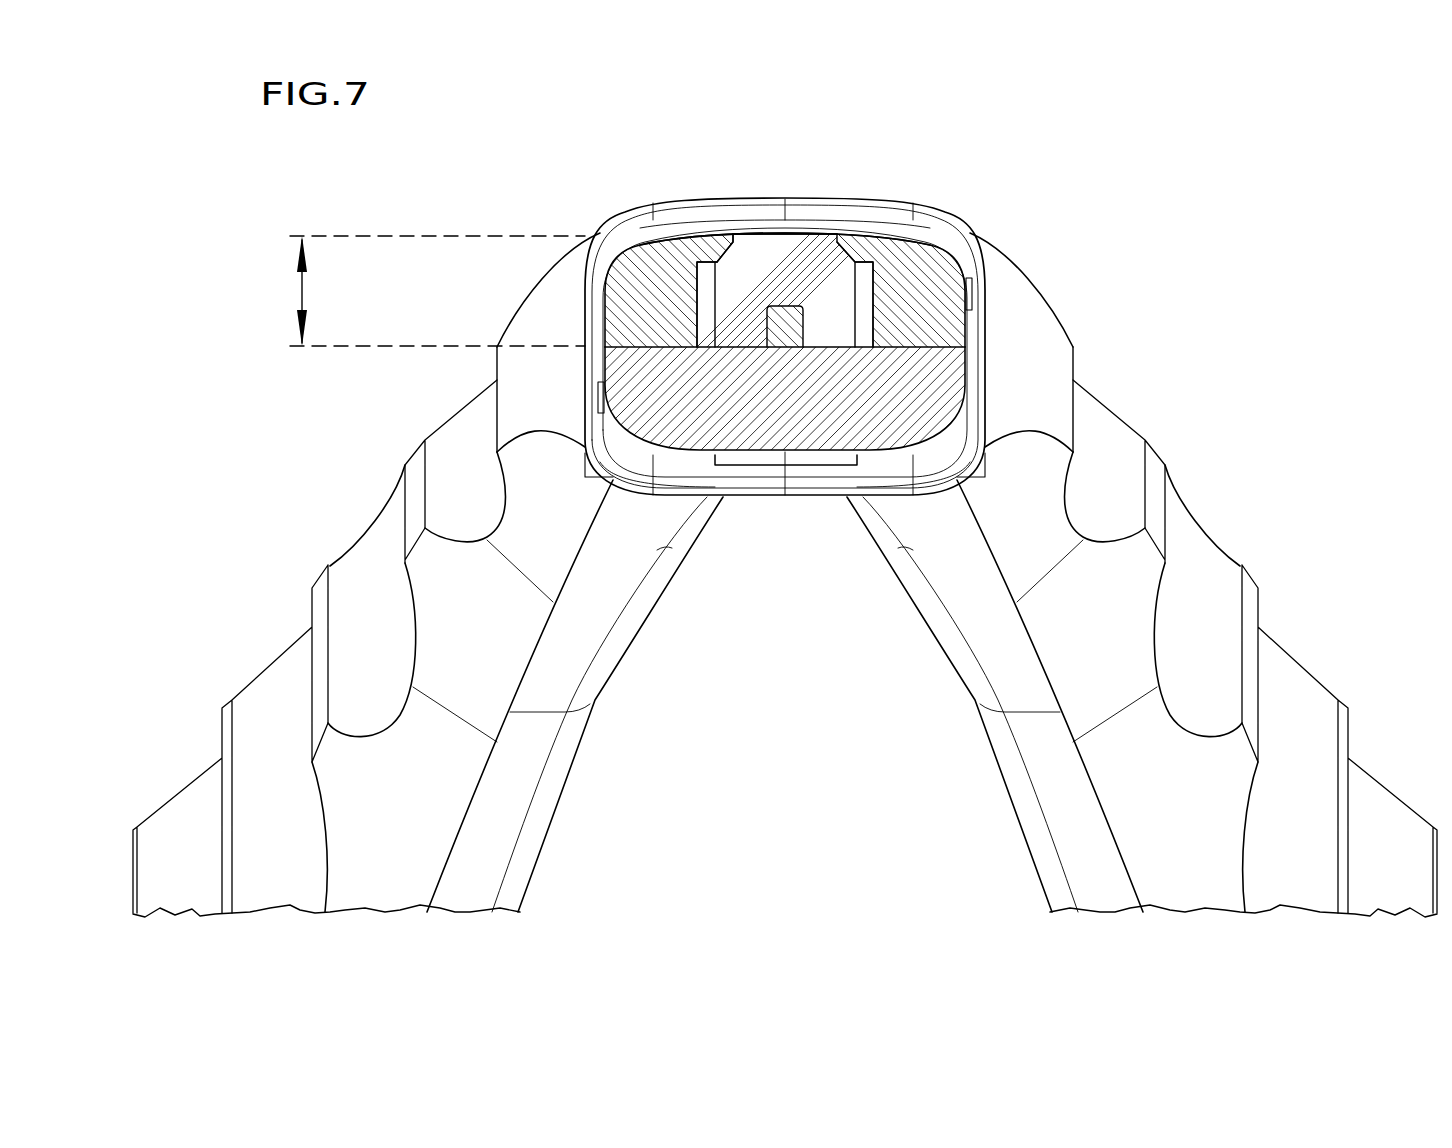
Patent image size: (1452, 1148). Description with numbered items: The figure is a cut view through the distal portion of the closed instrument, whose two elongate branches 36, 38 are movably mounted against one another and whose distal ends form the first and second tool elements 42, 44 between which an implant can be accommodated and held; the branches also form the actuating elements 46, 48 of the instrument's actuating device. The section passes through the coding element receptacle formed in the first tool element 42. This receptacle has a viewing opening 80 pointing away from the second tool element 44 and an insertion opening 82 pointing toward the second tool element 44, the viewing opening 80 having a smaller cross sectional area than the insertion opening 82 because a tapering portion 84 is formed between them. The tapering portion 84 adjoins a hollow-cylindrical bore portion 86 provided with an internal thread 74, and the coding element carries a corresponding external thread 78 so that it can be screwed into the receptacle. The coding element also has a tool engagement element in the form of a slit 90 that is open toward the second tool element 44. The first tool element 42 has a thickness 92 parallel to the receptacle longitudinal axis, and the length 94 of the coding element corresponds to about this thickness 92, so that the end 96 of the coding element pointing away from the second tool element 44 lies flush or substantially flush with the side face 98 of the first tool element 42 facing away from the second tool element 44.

The elongate branch 36 is at (685, 505).
The elongate branch 38 is at (958, 208).
The first tool element 42 is at (648, 275).
The second tool element 44 is at (660, 405).
The actuating element 46 is at (1197, 577).
The actuating element 48 is at (369, 586).
The internal thread 74 is at (703, 297).
The external thread 78 is at (870, 285).
The viewing opening 80 is at (823, 234).
The insertion opening 82 is at (872, 333).
The tapering portion 84 is at (727, 256).
The hollow-cylindrical bore portion 86 is at (848, 326).
The slit 90 is at (790, 309).
The thickness 92 is at (437, 291).
The length 94 is at (300, 289).
The end 96 is at (805, 235).
The side face 98 is at (690, 233).